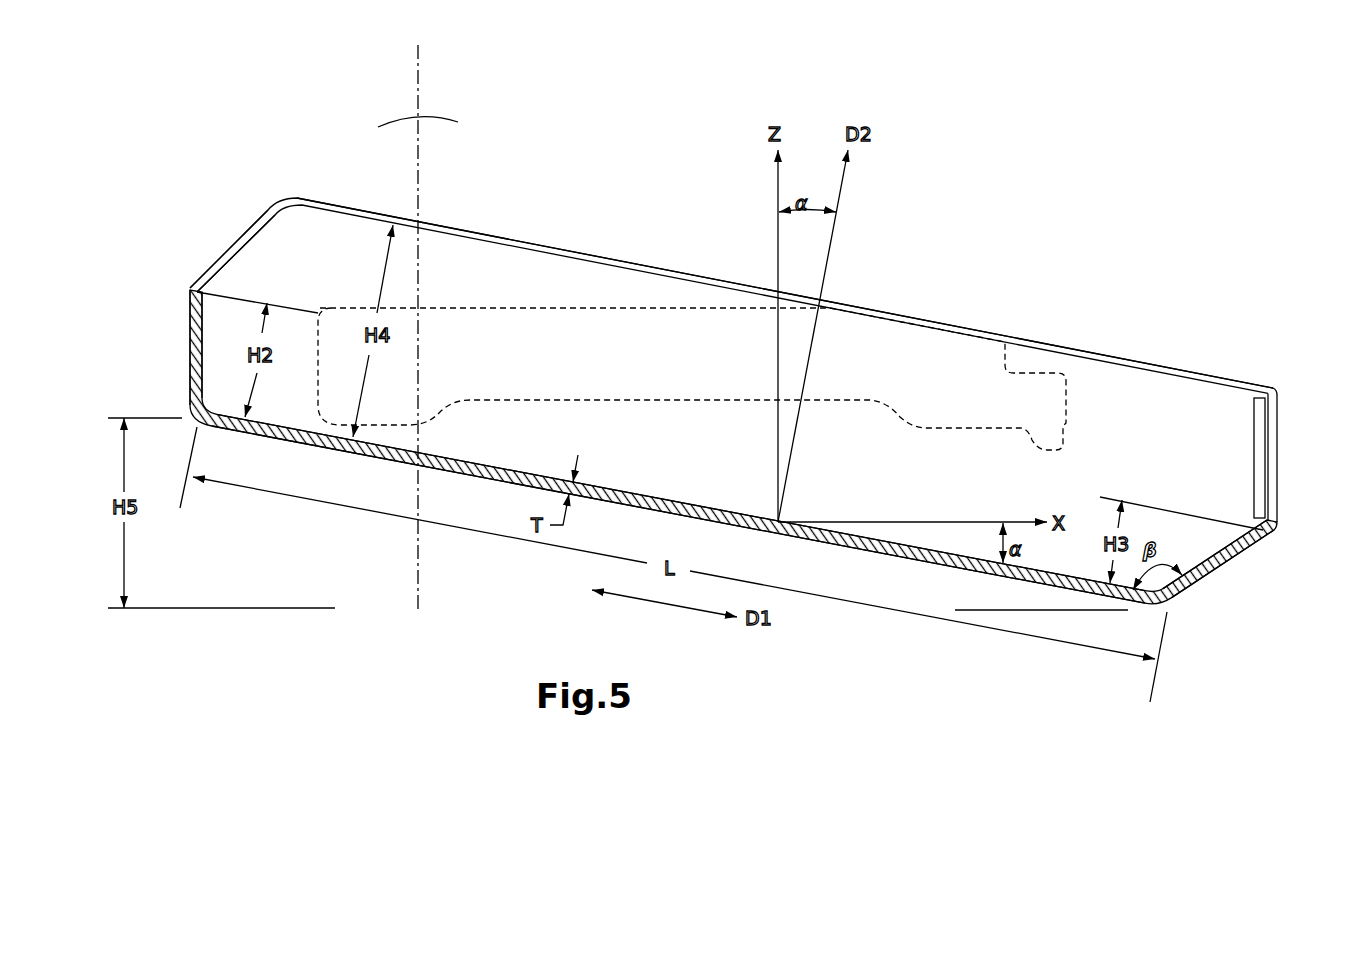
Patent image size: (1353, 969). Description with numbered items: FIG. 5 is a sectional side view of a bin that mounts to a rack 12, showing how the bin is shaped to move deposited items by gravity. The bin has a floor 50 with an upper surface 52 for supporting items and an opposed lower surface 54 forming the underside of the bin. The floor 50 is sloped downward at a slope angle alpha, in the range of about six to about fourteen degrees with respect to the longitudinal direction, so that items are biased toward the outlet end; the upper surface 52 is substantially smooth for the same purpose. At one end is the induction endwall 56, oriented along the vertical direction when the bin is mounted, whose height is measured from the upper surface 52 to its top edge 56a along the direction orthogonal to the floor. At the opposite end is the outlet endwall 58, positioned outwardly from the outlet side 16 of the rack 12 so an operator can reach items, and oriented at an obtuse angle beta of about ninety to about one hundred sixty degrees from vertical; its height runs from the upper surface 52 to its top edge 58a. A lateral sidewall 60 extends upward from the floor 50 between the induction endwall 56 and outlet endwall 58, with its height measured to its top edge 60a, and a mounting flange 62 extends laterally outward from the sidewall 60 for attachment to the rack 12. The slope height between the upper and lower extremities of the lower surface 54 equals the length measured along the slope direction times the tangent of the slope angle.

The rack 12 is at (431, 122).
The outlet side 16 is at (419, 83).
The floor 50 is at (379, 458).
The upper surface 52 is at (470, 462).
The lower surface 54 is at (447, 471).
The induction endwall 56 is at (188, 328).
The top edge of induction endwall 56a is at (194, 289).
The outlet endwall 58 is at (1217, 577).
The top edge of outlet endwall 58a is at (1271, 522).
The lateral sidewalls 60 is at (548, 283).
The top edge of sidewall 60a is at (490, 236).
The mounting flanges 62 is at (630, 308).